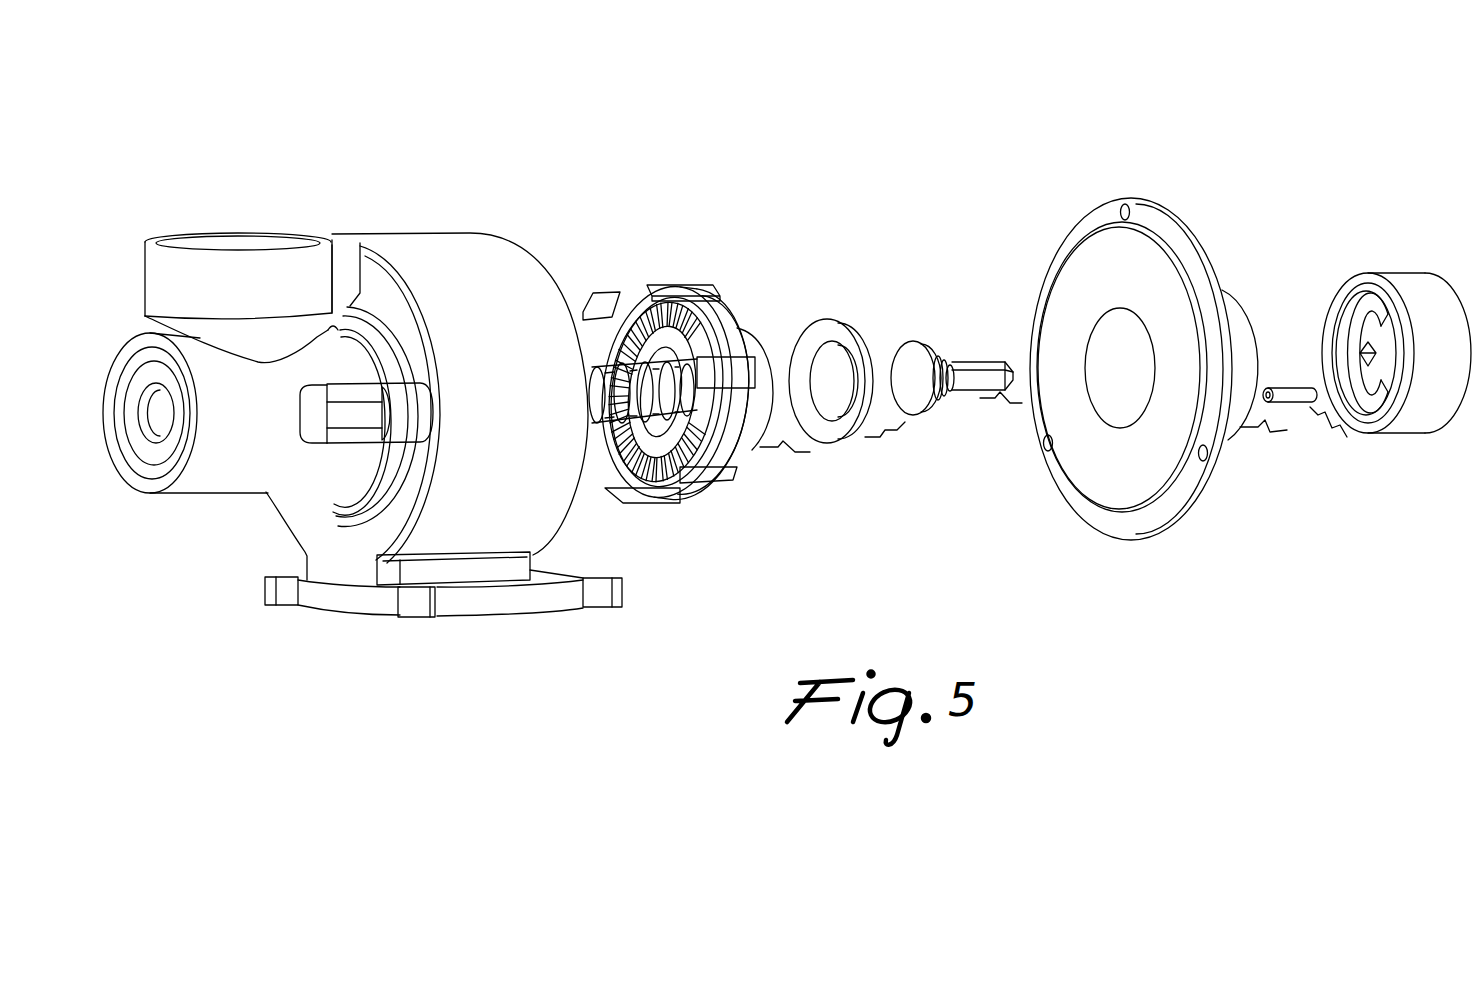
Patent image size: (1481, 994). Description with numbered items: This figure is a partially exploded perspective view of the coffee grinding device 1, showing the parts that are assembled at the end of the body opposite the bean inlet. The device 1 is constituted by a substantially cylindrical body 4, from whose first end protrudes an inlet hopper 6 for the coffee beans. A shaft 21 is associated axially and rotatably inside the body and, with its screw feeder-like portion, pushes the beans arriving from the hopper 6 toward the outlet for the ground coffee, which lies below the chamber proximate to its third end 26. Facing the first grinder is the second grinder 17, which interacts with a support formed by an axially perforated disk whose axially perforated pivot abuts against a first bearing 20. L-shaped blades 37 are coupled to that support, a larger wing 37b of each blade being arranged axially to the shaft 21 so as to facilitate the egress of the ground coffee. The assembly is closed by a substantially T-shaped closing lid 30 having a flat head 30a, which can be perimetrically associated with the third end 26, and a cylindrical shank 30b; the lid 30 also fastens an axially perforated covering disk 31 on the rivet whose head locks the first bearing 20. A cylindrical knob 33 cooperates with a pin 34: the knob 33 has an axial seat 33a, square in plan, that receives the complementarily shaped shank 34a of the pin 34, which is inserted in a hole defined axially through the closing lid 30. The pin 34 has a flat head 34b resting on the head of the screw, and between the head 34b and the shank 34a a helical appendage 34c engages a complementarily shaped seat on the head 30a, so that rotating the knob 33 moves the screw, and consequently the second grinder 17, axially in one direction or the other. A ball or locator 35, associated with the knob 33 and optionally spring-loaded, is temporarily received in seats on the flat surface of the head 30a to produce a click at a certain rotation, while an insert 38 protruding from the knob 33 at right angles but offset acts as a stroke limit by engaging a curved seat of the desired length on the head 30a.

The device 1 is at (590, 152).
The body 4 is at (421, 232).
The inlet hopper 6 is at (226, 236).
The second grinder 17 is at (662, 487).
The first bearing 20 is at (755, 342).
The shaft 21 is at (597, 397).
The third end 26 is at (440, 632).
The closing lid 30 is at (1143, 186).
The head 30a is at (1137, 522).
The shank 30b is at (1237, 336).
The covering disk 31 is at (837, 318).
The knob 33 is at (1420, 262).
The axial seat 33a is at (1361, 347).
The pin 34 is at (966, 404).
The shank 34a is at (977, 362).
The flat head 34b is at (912, 368).
The helical appendage 34c is at (913, 422).
The ball or locator 35 is at (1388, 395).
The L-shaped blades 37 is at (746, 480).
The larger wing 37b is at (691, 290).
The insert 38 is at (1298, 395).